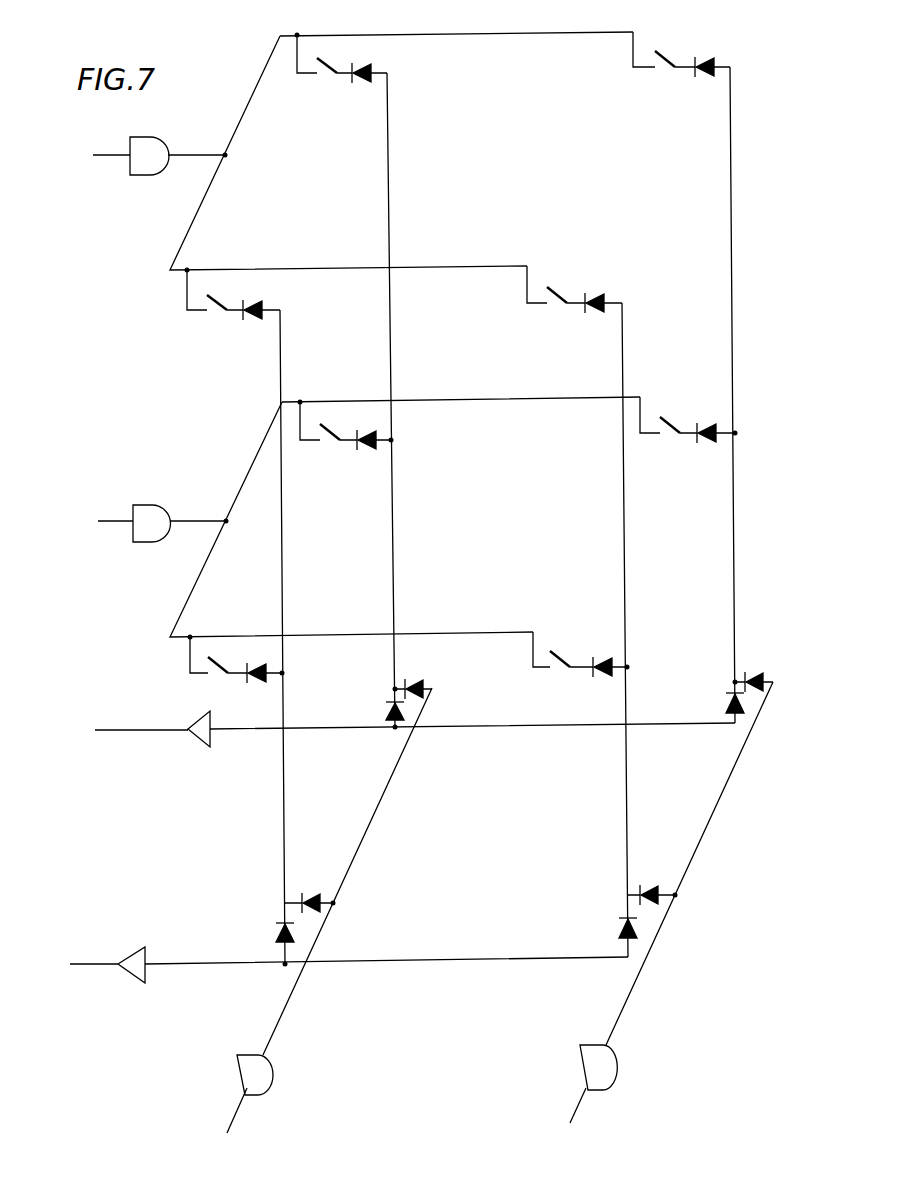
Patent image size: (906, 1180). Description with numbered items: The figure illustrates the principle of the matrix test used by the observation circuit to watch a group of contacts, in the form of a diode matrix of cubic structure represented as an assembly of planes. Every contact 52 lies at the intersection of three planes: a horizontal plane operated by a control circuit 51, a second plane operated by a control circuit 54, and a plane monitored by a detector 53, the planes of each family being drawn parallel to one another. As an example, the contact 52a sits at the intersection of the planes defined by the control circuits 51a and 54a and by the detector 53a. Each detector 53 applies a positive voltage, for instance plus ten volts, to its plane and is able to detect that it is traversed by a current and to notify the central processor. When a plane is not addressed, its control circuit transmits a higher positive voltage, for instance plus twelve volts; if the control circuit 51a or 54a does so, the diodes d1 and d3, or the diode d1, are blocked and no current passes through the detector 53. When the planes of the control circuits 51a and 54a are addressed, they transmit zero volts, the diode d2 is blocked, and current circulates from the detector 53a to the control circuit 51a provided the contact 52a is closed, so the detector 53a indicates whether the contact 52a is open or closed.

The control circuit 51a is at (159, 156).
The control circuit 51 is at (162, 523).
The contact 52a is at (327, 72).
The contact 52 is at (665, 58).
The diode d3 is at (364, 65).
The diode d2 is at (408, 679).
The diode d1 is at (387, 712).
The detector 53a is at (201, 746).
The detector 53 is at (134, 981).
The control circuit 54a is at (329, 910).
The control circuit 54 is at (671, 902).